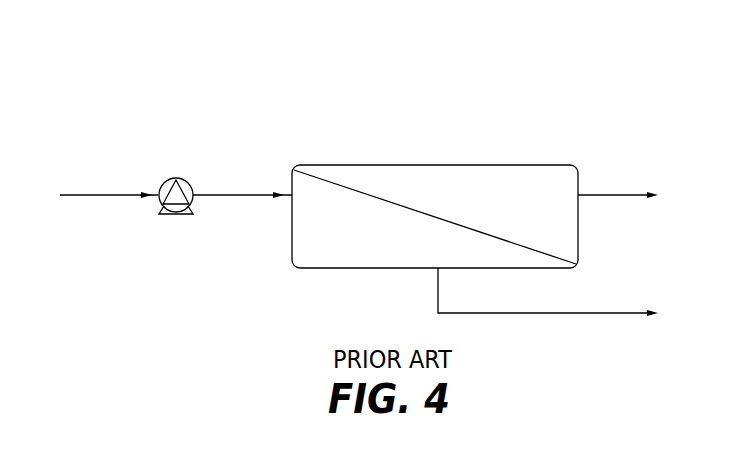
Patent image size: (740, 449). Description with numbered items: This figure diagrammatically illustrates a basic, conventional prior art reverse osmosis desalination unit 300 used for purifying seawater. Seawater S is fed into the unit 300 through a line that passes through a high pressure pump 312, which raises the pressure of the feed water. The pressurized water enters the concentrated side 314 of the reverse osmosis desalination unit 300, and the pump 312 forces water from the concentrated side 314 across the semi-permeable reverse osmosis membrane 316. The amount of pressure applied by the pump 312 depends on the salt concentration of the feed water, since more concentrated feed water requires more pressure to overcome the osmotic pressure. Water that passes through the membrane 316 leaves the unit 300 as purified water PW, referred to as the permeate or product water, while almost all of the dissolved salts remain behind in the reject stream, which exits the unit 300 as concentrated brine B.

The reverse osmosis desalination unit 300 is at (162, 73).
The high pressure pump 312 is at (163, 182).
The concentrated side 314 is at (320, 255).
The semi-permeable reverse osmosis membrane 316 is at (411, 203).